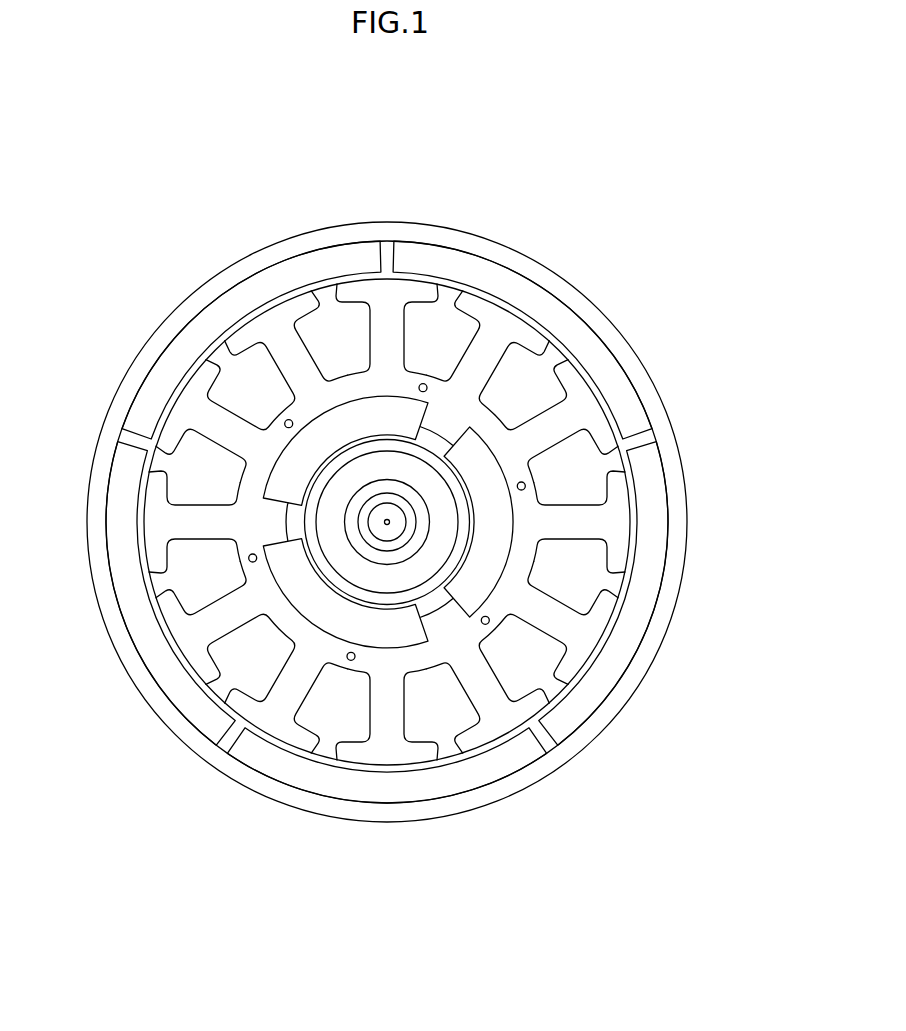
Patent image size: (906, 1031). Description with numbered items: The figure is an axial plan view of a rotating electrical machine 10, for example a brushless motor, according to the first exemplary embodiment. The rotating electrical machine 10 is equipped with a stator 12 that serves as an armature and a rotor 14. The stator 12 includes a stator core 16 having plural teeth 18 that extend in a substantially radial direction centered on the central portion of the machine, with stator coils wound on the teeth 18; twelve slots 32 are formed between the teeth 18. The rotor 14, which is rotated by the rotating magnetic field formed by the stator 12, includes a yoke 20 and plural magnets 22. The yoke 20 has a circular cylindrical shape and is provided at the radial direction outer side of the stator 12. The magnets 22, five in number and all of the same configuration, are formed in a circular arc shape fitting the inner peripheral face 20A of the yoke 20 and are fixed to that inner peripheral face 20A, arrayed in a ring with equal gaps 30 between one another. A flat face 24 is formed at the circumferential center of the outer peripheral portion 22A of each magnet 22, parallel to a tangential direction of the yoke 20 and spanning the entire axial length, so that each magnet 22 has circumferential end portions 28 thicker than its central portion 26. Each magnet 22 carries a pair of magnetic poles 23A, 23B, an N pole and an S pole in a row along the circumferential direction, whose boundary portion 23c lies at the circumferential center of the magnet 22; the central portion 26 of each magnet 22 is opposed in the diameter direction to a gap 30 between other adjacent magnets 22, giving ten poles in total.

The rotating electrical machine 10 is at (430, 138).
The stator 12 is at (423, 278).
The rotor 14 is at (585, 290).
The stator core 16 is at (620, 360).
The teeth 18 is at (378, 305).
The yoke 20 is at (525, 285).
The inner peripheral face 20A is at (545, 300).
The magnets 22 is at (217, 319).
The outer peripheral portion 22A is at (630, 400).
The magnetic pole 23A is at (505, 275).
The magnetic pole 23B is at (600, 395).
The boundary portion 23c is at (560, 305).
The flat face 24 is at (600, 305).
The central portion 26 is at (575, 275).
The end portions 28 is at (400, 258).
The gaps 30 is at (387, 262).
The slots 32 is at (330, 320).